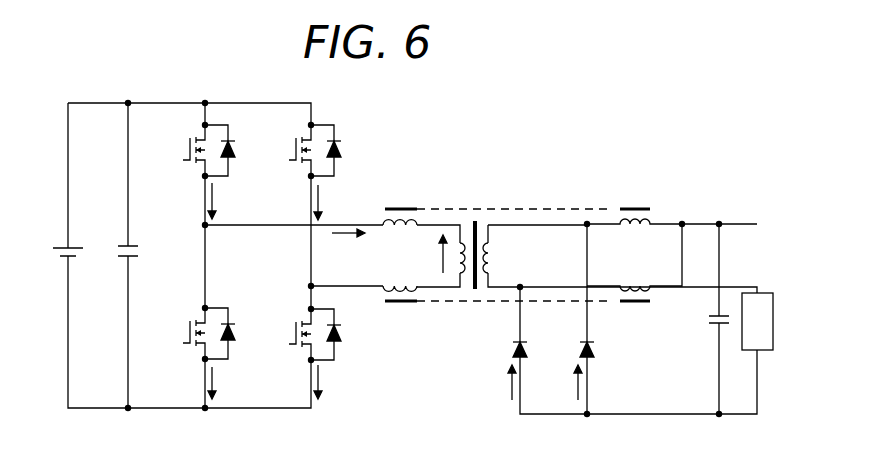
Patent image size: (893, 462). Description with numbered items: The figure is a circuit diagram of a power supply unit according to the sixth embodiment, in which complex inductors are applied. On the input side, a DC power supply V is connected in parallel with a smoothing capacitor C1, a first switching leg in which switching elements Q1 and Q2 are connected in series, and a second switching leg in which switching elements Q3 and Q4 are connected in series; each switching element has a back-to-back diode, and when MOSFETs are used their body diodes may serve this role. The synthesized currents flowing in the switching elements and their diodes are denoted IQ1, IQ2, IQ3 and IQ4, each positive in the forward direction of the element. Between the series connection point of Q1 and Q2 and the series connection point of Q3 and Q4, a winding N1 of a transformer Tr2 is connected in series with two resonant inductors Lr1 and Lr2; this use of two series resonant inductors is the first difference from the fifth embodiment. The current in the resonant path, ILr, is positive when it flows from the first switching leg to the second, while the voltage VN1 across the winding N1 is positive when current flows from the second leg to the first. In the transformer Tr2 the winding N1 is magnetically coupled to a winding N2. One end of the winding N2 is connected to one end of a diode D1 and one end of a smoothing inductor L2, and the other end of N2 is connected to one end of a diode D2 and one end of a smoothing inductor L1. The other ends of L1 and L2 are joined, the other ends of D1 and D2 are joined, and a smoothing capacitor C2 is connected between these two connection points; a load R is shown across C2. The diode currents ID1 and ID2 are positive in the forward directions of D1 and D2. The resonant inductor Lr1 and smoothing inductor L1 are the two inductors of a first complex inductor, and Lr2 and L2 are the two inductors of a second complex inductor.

The DC power supply V is at (80, 255).
The smoothing capacitor C1 is at (140, 253).
The switching element Q1 is at (194, 150).
The switching element Q2 is at (194, 333).
The switching element Q3 is at (300, 150).
The switching element Q4 is at (300, 334).
The synthesized current IQ1 is at (227, 201).
The synthesized current IQ2 is at (227, 383).
The synthesized current IQ3 is at (333, 202).
The synthesized current IQ4 is at (333, 382).
The resonant inductor current ILr is at (348, 243).
The resonant inductor Lr1 is at (385, 208).
The resonant inductor Lr2 is at (385, 302).
The transformer Tr2 is at (475, 218).
The winding N1 is at (462, 276).
The winding N2 is at (488, 276).
The voltage across winding N1 VN1 is at (425, 254).
The smoothing inductor L1 is at (672, 230).
The smoothing inductor L2 is at (634, 262).
The diode D1 is at (505, 352).
The diode D2 is at (571, 352).
The diode current ID1 is at (496, 382).
The diode current ID2 is at (562, 382).
The smoothing capacitor C2 is at (706, 319).
The load resistor R is at (765, 321).